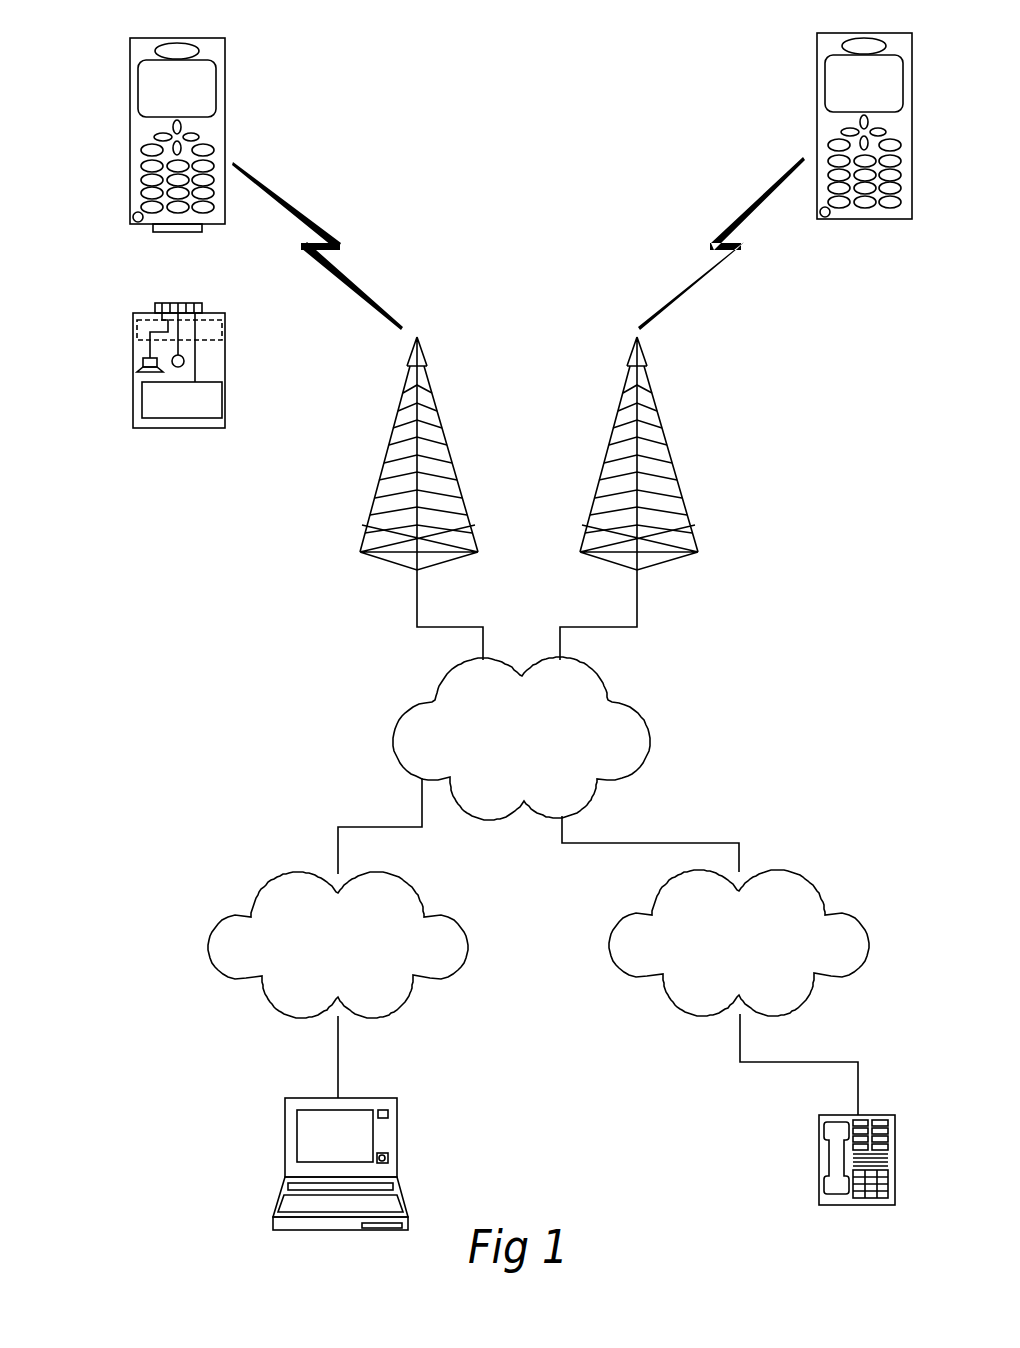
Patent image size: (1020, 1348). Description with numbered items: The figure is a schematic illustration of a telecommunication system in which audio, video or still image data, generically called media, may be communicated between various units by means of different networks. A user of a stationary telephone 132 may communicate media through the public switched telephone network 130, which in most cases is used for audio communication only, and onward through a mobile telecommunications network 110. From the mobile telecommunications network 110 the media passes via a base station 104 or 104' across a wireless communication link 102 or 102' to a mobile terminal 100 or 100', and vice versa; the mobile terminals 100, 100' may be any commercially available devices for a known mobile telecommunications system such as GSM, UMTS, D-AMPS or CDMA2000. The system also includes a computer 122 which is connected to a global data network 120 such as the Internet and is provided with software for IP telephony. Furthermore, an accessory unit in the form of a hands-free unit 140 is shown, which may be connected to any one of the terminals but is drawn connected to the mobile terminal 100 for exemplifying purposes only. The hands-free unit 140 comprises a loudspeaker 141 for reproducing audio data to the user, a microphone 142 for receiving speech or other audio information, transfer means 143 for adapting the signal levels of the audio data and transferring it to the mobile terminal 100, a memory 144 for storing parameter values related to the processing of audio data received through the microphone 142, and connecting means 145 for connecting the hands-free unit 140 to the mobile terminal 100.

The mobile terminal 100 is at (141, 119).
The mobile terminal 100' is at (826, 110).
The wireless communication link 102 is at (317, 246).
The wireless communication link 102' is at (721, 243).
The base station 104 is at (404, 498).
The base station 104' is at (620, 498).
The mobile telecommunications network 110 is at (502, 709).
The global data network 120 is at (319, 928).
The computer 122 is at (295, 1203).
The public switched telephone network 130 is at (720, 938).
The stationary telephone 132 is at (819, 1138).
The hands-free unit 140 is at (179, 351).
The loudspeaker 141 is at (143, 370).
The microphone 142 is at (183, 360).
The transfer means 143 is at (138, 330).
The memory 144 is at (210, 407).
The connecting means 145 is at (198, 310).